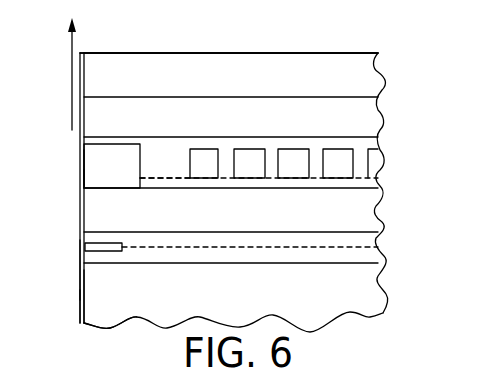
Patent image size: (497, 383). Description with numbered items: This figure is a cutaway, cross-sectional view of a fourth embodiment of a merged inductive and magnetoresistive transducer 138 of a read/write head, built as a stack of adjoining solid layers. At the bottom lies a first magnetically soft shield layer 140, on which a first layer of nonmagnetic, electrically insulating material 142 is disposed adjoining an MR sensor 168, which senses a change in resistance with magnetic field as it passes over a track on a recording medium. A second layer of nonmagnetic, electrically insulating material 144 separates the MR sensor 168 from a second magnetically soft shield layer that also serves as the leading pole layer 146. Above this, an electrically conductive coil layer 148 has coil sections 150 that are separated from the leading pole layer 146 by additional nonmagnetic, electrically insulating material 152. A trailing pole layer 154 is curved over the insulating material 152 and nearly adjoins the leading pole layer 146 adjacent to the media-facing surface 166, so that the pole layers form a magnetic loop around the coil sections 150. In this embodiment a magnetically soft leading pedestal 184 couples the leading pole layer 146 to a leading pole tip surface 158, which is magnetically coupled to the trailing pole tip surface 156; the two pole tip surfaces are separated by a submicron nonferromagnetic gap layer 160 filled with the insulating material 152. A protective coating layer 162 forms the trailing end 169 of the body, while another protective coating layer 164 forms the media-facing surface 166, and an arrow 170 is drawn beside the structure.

The merged inductive and magnetoresistive transducer 138 is at (237, 21).
The first magnetically soft shield layer 140 is at (363, 300).
The first layer of nonmagnetic, electrically insulating material 142 is at (378, 252).
The second layer of nonmagnetic, electrically insulating material 144 is at (372, 238).
The leading pole layer 146 is at (362, 207).
The electrically conductive coil layer 148 is at (387, 172).
The coil sections 150 is at (338, 170).
The nonmagnetic, electrically insulating material 152 is at (177, 182).
The trailing pole layer 154 is at (372, 120).
The trailing pole tip surface 156 is at (90, 122).
The leading pole tip surface 158 is at (96, 177).
The nonferromagnetic gap layer 160 is at (88, 142).
The protective coating layer 162 is at (363, 87).
The protective coating layer 164 is at (82, 296).
The media-facing surface 166 is at (76, 269).
The MR sensor 168 is at (84, 247).
The trailing end 169 is at (350, 46).
The light emission direction 170 is at (71, 65).
The magnetically soft leading pedestal 184 is at (85, 161).